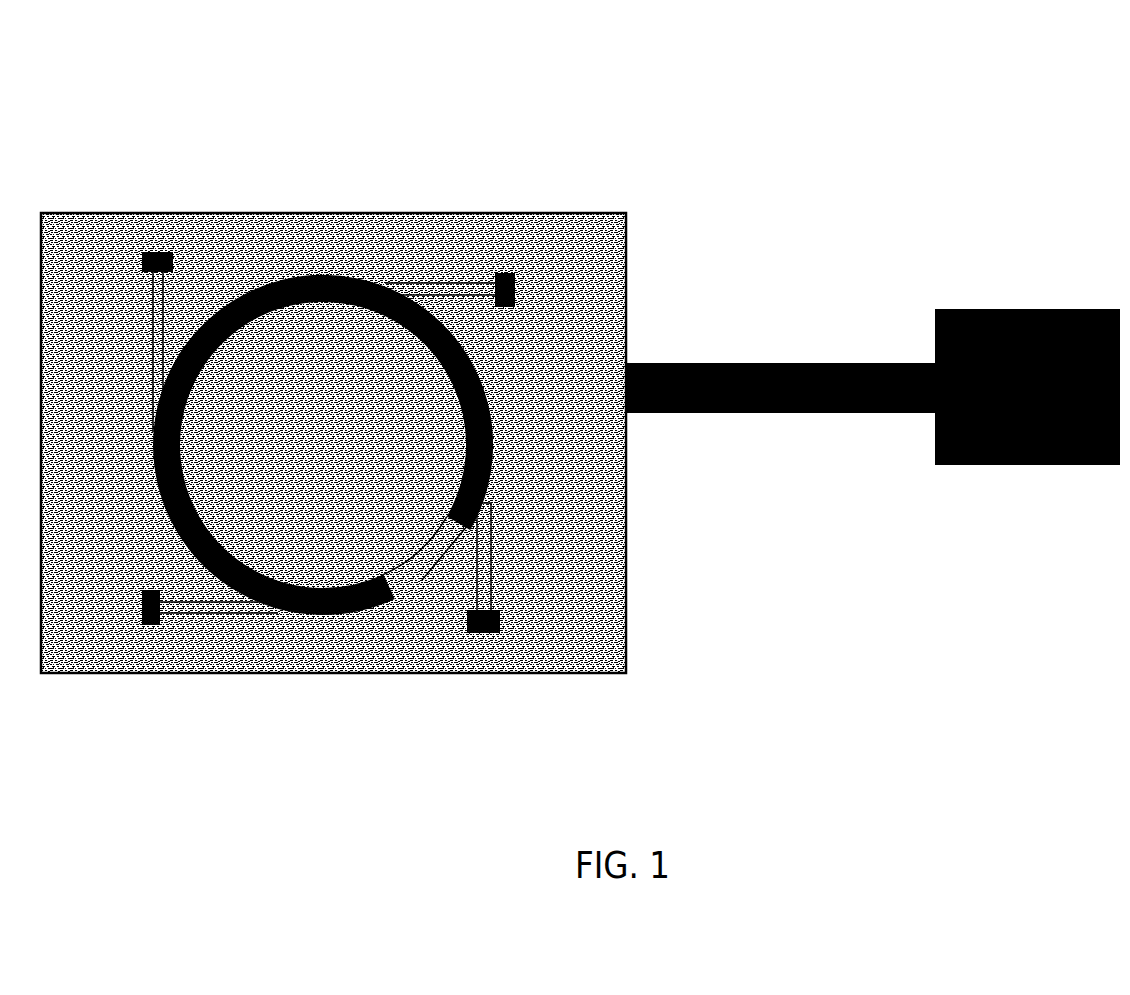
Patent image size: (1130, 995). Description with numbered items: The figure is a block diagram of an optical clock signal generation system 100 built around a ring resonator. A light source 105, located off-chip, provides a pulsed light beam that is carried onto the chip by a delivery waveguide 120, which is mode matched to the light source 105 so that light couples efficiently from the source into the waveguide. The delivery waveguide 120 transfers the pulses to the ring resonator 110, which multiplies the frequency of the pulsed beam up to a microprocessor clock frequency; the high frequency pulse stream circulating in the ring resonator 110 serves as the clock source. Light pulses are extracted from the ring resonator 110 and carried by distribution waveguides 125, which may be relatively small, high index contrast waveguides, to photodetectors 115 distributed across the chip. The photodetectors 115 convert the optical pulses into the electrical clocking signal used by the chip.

The optical clock signal generation system 100 is at (328, 63).
The light source 105 is at (1006, 307).
The ring resonator 110 is at (474, 365).
The photodetectors 115 is at (173, 252).
The delivery waveguide 120 is at (508, 437).
The distribution waveguides 125 is at (155, 353).